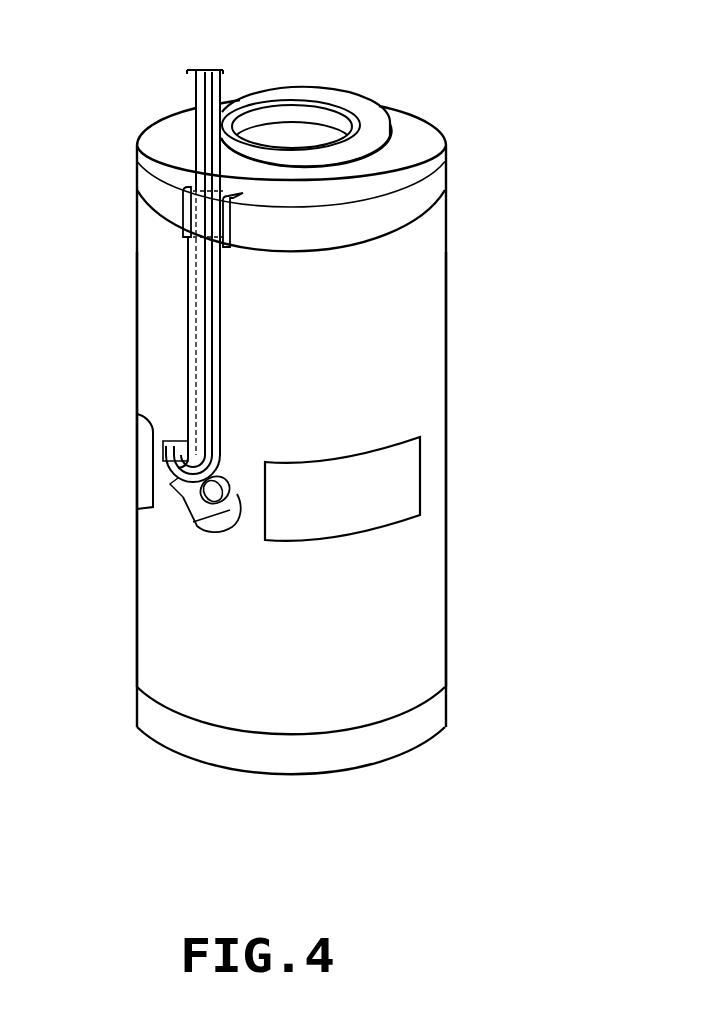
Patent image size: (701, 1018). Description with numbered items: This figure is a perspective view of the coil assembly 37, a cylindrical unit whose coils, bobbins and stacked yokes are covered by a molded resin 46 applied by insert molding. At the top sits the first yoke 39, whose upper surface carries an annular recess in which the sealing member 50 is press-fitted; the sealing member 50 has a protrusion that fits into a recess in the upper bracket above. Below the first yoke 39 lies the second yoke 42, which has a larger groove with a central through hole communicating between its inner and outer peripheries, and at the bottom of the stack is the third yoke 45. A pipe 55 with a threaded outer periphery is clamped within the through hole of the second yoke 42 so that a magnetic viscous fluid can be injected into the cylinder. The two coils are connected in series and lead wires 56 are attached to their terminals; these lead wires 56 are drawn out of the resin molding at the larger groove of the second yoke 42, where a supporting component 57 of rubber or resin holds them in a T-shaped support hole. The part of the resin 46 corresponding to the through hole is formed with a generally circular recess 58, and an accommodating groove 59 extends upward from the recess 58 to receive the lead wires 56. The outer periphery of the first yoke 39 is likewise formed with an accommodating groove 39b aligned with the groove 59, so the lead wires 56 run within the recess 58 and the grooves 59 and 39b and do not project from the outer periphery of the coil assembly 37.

The coil assembly 37 is at (470, 392).
The first yoke 39 is at (437, 190).
The accommodating groove 39b is at (187, 221).
The second yoke 42 is at (385, 487).
The third yoke 45 is at (440, 712).
The resin 46 is at (148, 630).
The sealing member 50 is at (360, 103).
The pipe 55 is at (224, 471).
The lead wires 56 is at (222, 82).
The supporting component 57 is at (163, 453).
The recess 58 is at (200, 521).
The accommodating groove 59 is at (187, 333).